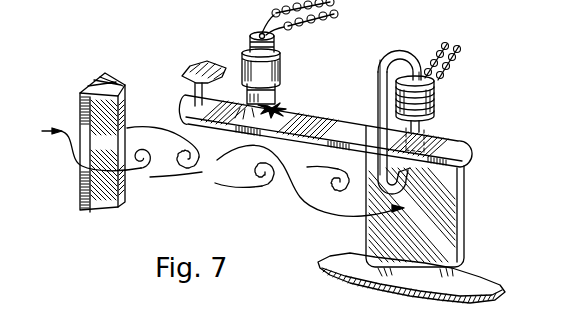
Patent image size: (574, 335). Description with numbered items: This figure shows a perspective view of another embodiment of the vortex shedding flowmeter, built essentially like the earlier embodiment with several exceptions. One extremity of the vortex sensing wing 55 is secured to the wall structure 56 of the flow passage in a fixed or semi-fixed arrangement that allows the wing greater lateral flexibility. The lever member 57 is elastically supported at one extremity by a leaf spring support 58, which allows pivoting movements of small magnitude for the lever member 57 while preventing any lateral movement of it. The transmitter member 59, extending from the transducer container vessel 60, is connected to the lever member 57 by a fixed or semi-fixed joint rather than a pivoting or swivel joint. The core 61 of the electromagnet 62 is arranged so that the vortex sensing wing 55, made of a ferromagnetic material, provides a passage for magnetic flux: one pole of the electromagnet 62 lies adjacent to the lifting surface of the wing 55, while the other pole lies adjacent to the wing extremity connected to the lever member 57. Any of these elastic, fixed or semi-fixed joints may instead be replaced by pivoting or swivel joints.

The vortex sensing wing 55 is at (432, 213).
The wall structure 56 is at (473, 287).
The lever member 57 is at (342, 112).
The leaf spring support 58 is at (188, 97).
The transmitter member 59 is at (292, 110).
The transducer container vessel 60 is at (246, 76).
The core 61 is at (379, 100).
The electromagnet 62 is at (432, 100).